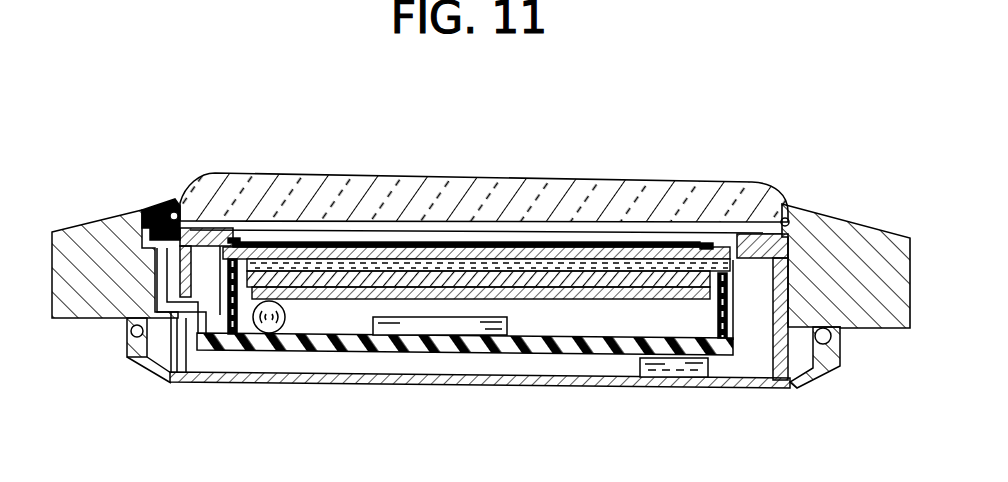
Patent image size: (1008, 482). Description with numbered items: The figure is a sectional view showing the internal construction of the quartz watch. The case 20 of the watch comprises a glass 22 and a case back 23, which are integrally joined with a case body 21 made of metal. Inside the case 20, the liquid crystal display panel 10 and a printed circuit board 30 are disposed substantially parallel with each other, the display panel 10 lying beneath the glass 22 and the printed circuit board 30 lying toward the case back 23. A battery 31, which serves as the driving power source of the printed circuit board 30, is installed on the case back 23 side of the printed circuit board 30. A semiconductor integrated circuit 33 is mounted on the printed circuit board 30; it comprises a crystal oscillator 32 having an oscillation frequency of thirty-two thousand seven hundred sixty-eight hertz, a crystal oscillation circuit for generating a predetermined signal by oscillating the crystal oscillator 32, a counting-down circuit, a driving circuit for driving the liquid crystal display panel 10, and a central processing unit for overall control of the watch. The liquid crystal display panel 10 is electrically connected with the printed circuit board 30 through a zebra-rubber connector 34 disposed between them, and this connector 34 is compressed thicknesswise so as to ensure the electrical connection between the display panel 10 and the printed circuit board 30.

The liquid crystal display panel 10 is at (400, 236).
The case 20 is at (163, 166).
The case body 21 is at (862, 233).
The glass 22 is at (665, 181).
The case back 23 is at (803, 386).
The printed circuit board 30 is at (568, 356).
The battery 31 is at (680, 371).
The crystal oscillator 32 is at (270, 334).
The semiconductor integrated circuit 33 is at (443, 337).
The zebra-rubber connector 34 is at (228, 303).